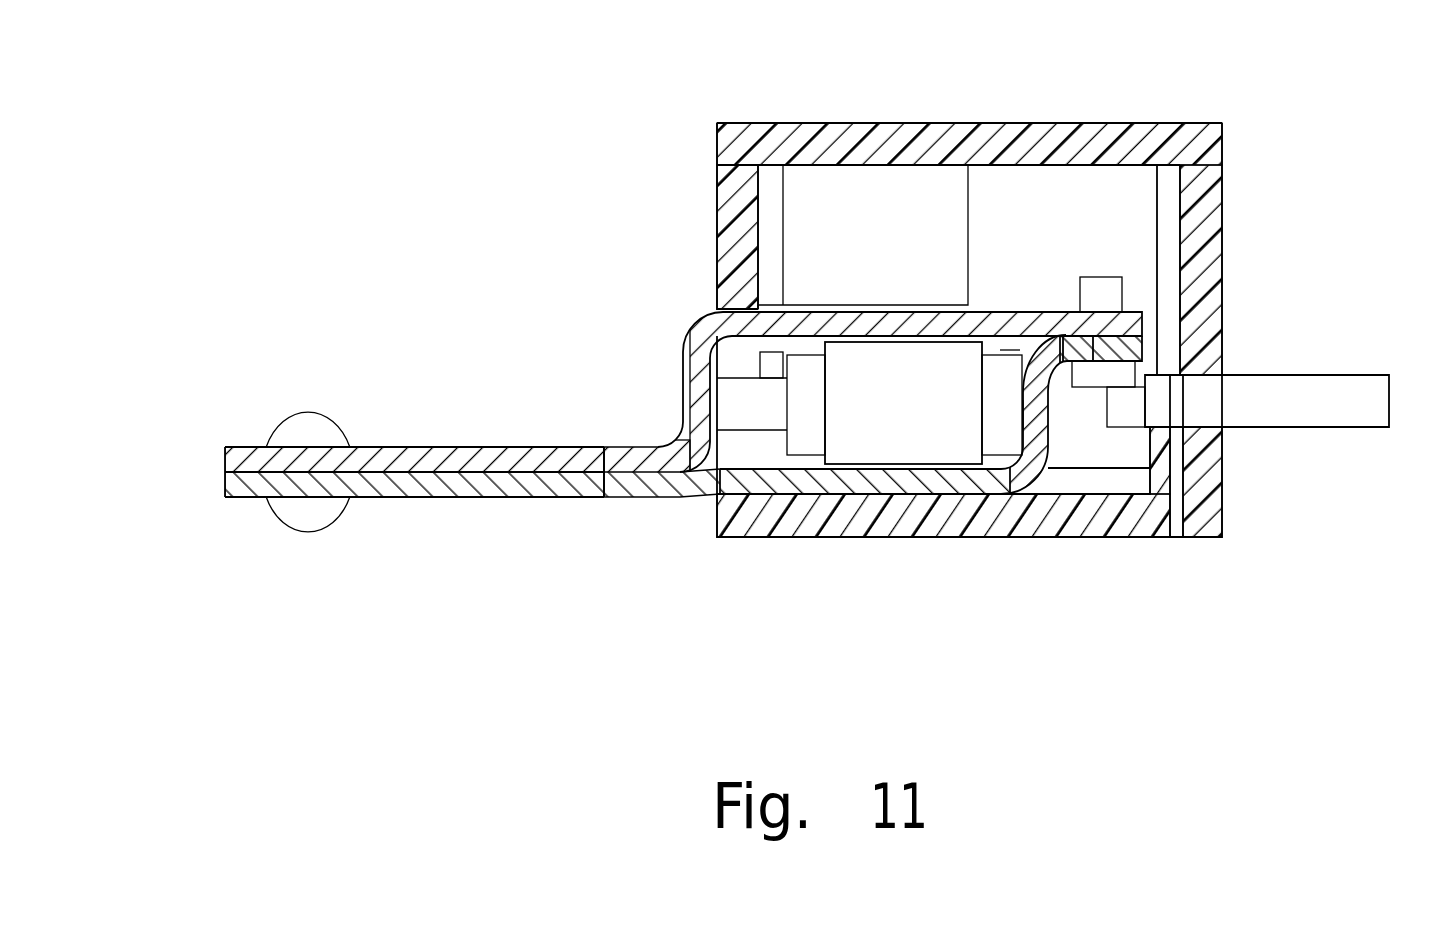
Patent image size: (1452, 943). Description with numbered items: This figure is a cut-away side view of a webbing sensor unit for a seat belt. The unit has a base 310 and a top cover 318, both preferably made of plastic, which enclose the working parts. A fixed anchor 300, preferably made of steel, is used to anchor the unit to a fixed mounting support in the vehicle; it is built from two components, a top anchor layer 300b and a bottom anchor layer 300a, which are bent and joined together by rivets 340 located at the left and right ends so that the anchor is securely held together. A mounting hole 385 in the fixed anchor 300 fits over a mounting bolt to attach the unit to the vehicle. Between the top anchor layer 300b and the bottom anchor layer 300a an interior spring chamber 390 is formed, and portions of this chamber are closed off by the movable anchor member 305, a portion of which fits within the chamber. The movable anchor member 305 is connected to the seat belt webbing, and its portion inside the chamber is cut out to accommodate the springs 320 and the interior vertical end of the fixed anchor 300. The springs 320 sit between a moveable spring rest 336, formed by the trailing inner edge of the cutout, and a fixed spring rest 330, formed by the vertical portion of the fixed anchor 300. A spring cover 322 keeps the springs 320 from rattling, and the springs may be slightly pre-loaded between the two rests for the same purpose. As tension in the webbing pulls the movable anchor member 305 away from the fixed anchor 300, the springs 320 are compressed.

The fixed anchor 300 is at (352, 483).
The bottom anchor layer 300a is at (222, 473).
The top anchor layer 300b is at (225, 454).
The movable anchor member 305 is at (1390, 402).
The base 310 is at (775, 537).
The top cover 318 is at (815, 123).
The spring 320 is at (1001, 440).
The spring cover 322 is at (905, 452).
The fixed spring rest 330 is at (1022, 420).
The moveable spring rest 336 is at (788, 413).
The rivet 340 is at (330, 430).
The mounting hole 385 is at (410, 489).
The interior spring chamber 390 is at (1019, 350).